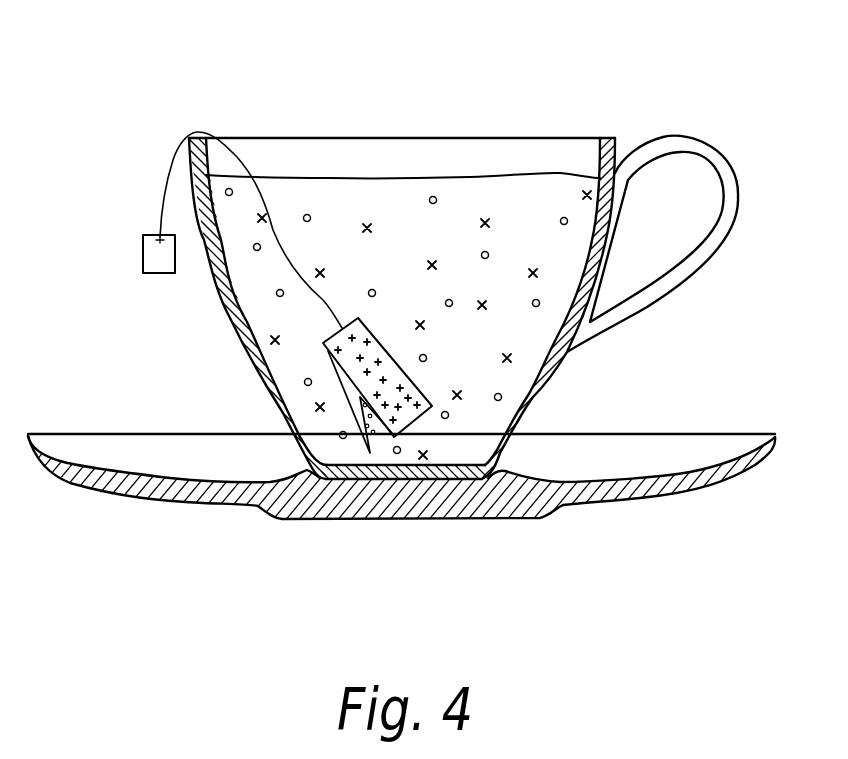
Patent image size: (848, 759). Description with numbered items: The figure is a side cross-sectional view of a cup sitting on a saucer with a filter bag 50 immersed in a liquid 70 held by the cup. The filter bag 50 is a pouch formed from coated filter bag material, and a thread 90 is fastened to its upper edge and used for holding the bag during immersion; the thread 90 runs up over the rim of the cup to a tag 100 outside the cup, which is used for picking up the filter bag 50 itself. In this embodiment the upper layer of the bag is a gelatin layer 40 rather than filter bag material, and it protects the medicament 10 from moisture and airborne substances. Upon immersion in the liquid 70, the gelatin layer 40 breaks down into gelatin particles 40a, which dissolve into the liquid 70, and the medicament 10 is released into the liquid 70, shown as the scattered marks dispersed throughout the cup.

The medicament 10 is at (428, 202).
The gelatin layer 40 is at (406, 395).
The gelatin particles 40a is at (436, 260).
The filter bag 50 is at (397, 385).
The liquid 70 is at (549, 172).
The thread 90 is at (263, 190).
The tag 100 is at (142, 257).